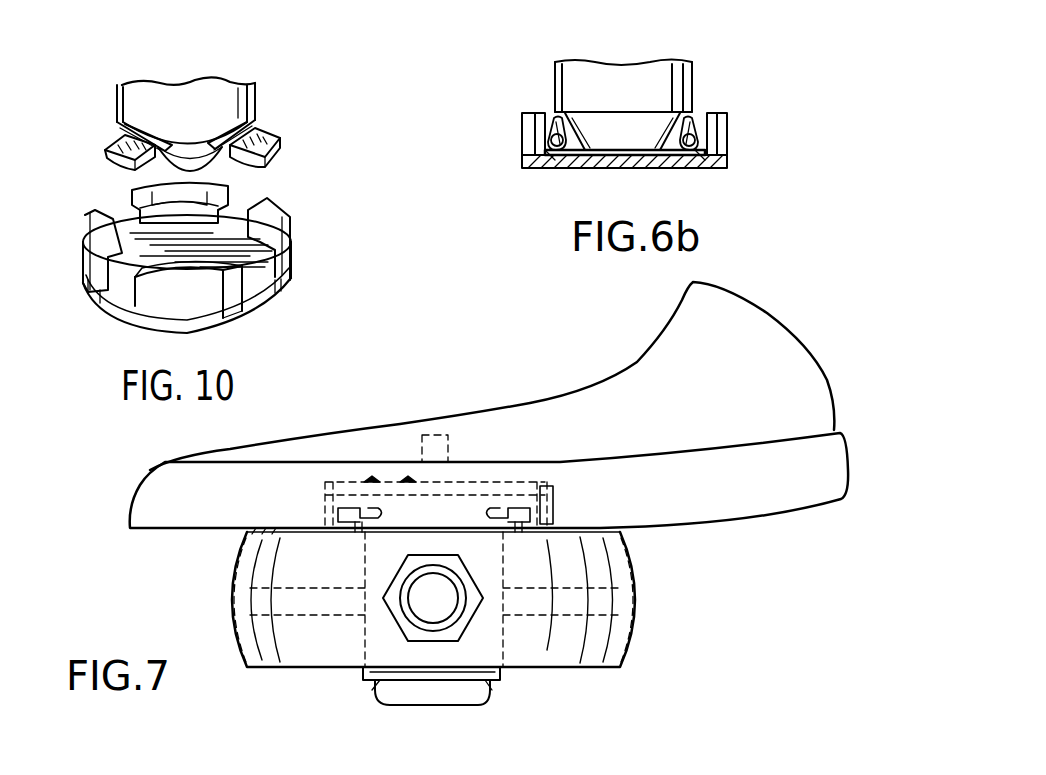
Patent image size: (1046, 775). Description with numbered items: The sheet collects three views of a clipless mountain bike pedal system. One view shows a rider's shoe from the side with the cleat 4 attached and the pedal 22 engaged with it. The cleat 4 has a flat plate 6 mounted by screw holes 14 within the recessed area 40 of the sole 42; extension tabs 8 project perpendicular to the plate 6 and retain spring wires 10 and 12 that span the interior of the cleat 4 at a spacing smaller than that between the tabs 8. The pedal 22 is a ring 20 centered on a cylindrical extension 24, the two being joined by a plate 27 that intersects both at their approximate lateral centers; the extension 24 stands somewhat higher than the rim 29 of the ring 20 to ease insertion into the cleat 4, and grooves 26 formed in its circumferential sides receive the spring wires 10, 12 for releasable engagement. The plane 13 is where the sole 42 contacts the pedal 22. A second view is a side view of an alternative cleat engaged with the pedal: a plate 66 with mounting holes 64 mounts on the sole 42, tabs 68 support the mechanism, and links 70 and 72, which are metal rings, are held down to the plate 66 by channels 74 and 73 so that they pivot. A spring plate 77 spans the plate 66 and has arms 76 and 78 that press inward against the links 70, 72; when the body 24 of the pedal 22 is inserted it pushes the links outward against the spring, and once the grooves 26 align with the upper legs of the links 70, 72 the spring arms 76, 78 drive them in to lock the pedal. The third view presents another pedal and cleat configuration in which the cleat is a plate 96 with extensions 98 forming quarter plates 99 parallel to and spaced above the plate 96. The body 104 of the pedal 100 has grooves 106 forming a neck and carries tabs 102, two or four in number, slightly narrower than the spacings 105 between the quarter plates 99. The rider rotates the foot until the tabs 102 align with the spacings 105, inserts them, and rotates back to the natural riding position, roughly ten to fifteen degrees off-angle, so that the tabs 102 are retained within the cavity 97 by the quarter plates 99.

In FIG. 7, the cleat 4 is at (568, 480).
In FIG. 7, the flat plate 6 is at (372, 478).
In FIG. 7, the extension tabs 8 is at (318, 495).
In FIG. 7, the spring wire 10 is at (355, 533).
In FIG. 7, the spring wire 12 is at (525, 530).
In FIG. 7, the plane 13 is at (155, 530).
In FIG. 7, the screw holes 14 is at (450, 477).
In FIG. 7, the ring 20 is at (228, 600).
In FIG. 7, the pedal 22 is at (667, 532).
In FIG. 6b, the cylindrical extension 24 is at (672, 82).
In FIG. 6b, the grooves 26 is at (672, 125).
In FIG. 7, the plate 27 is at (290, 616).
In FIG. 7, the rim 29 is at (248, 528).
In FIG. 7, the recessed area 40 is at (553, 485).
In FIG. 7, the sole 42 is at (740, 505).
In FIG. 6b, the mounting holes 64 is at (640, 160).
In FIG. 6b, the plate 66 is at (575, 162).
In FIG. 6b, the tabs 68 is at (525, 130).
In FIG. 6b, the link 70 is at (553, 132).
In FIG. 6b, the link 72 is at (692, 130).
In FIG. 6b, the channel 73 is at (680, 160).
In FIG. 6b, the channel 74 is at (565, 166).
In FIG. 6b, the spring arm 76 is at (550, 118).
In FIG. 6b, the spring plate 77 is at (605, 150).
In FIG. 6b, the spring arm 78 is at (697, 118).
In FIG. 10, the plate 96 is at (262, 295).
In FIG. 10, the cavity 97 is at (235, 235).
In FIG. 10, the extensions 98 is at (152, 298).
In FIG. 10, the quarter plates 99 is at (107, 228).
In FIG. 10, the pedal 100 is at (54, 73).
In FIG. 10, the tabs 102 is at (118, 148).
In FIG. 10, the body 104 is at (245, 97).
In FIG. 10, the spacing 105 is at (115, 290).
In FIG. 10, the grooves 106 is at (128, 125).